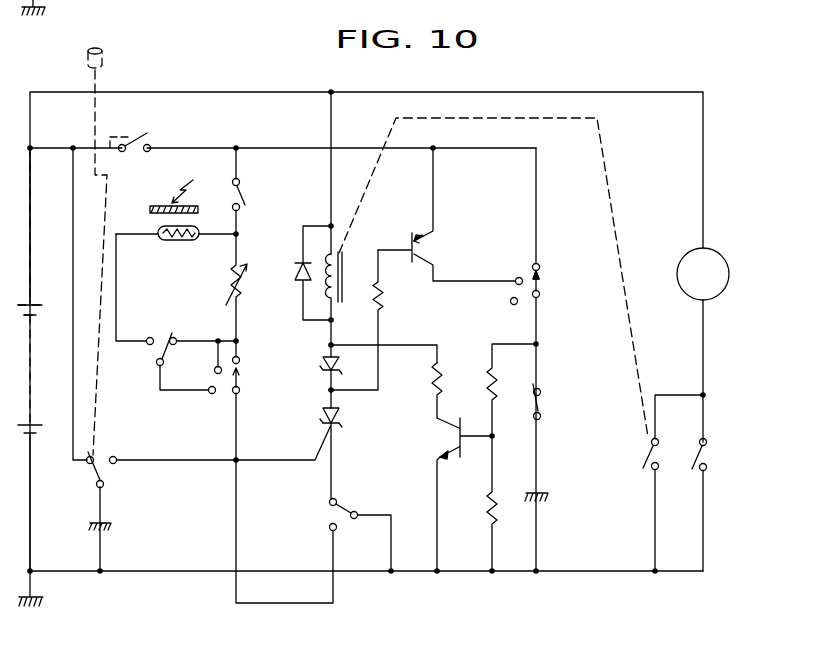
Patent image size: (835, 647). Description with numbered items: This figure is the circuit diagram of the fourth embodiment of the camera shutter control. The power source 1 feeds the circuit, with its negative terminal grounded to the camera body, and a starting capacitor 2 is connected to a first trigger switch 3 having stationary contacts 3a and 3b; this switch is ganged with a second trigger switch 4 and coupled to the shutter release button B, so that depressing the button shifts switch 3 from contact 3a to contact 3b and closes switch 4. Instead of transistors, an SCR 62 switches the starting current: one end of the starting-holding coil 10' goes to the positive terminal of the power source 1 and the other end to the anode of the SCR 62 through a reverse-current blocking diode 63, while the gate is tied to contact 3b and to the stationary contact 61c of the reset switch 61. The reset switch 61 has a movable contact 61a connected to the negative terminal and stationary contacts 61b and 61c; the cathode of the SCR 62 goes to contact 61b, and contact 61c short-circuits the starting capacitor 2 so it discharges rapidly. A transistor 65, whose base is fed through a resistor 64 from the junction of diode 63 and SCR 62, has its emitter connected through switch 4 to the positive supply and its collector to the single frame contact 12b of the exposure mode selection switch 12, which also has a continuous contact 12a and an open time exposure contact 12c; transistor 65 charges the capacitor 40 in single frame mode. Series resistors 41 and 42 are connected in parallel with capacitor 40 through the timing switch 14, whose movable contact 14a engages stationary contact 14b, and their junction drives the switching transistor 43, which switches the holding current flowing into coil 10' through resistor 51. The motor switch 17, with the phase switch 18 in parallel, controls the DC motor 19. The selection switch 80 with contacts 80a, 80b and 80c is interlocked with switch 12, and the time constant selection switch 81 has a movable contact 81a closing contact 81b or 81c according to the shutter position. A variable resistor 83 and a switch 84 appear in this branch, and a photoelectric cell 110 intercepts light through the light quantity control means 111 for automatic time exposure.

The shutter release button B is at (103, 58).
The power source 1 is at (33, 362).
The starting capacitor 2 is at (112, 526).
The first trigger switch 3 is at (96, 463).
The stationary contact 3a is at (86, 463).
The stationary contact 3b is at (116, 464).
The second trigger switch 4 is at (142, 136).
The starting-holding coil 10' is at (487, 277).
The exposure mode selection switch 12 is at (540, 294).
The stationary contact 12a is at (540, 267).
The stationary contact 12b is at (516, 278).
The stationary contact 12c is at (510, 301).
The timing switch 14 is at (539, 420).
The movable contact of timing switch 14a is at (539, 403).
The stationary contact 14b is at (541, 391).
The motor switch 17 is at (651, 454).
The phase switch 18 is at (697, 454).
The DC motor 19 is at (708, 248).
The capacitor 40 is at (549, 497).
The resistor 41 is at (474, 388).
The resistor 42 is at (484, 508).
The switching transistor 43 is at (454, 438).
The resistor 51 is at (438, 388).
The reset switch 61 is at (358, 513).
The movable contact 61a is at (350, 519).
The stationary contact 61b is at (336, 499).
The stationary contact 61c is at (329, 527).
The SCR 62 is at (325, 421).
The diode 63 is at (325, 358).
The resistor 64 is at (383, 296).
The transistor 65 is at (418, 248).
The selection switch 80 is at (238, 378).
The stationary contact 80a is at (238, 357).
The stationary contact 80b is at (215, 370).
The stationary contact 80c is at (211, 394).
The time constant selection switch 81 is at (157, 365).
The movable contact 81a is at (165, 342).
The stationary contact 81b is at (175, 338).
The stationary contact 81c is at (148, 345).
The variable resistor 83 is at (230, 280).
The switch 84 is at (241, 192).
The photoelectric cell 110 is at (160, 228).
The light quantity control means 111 is at (163, 203).